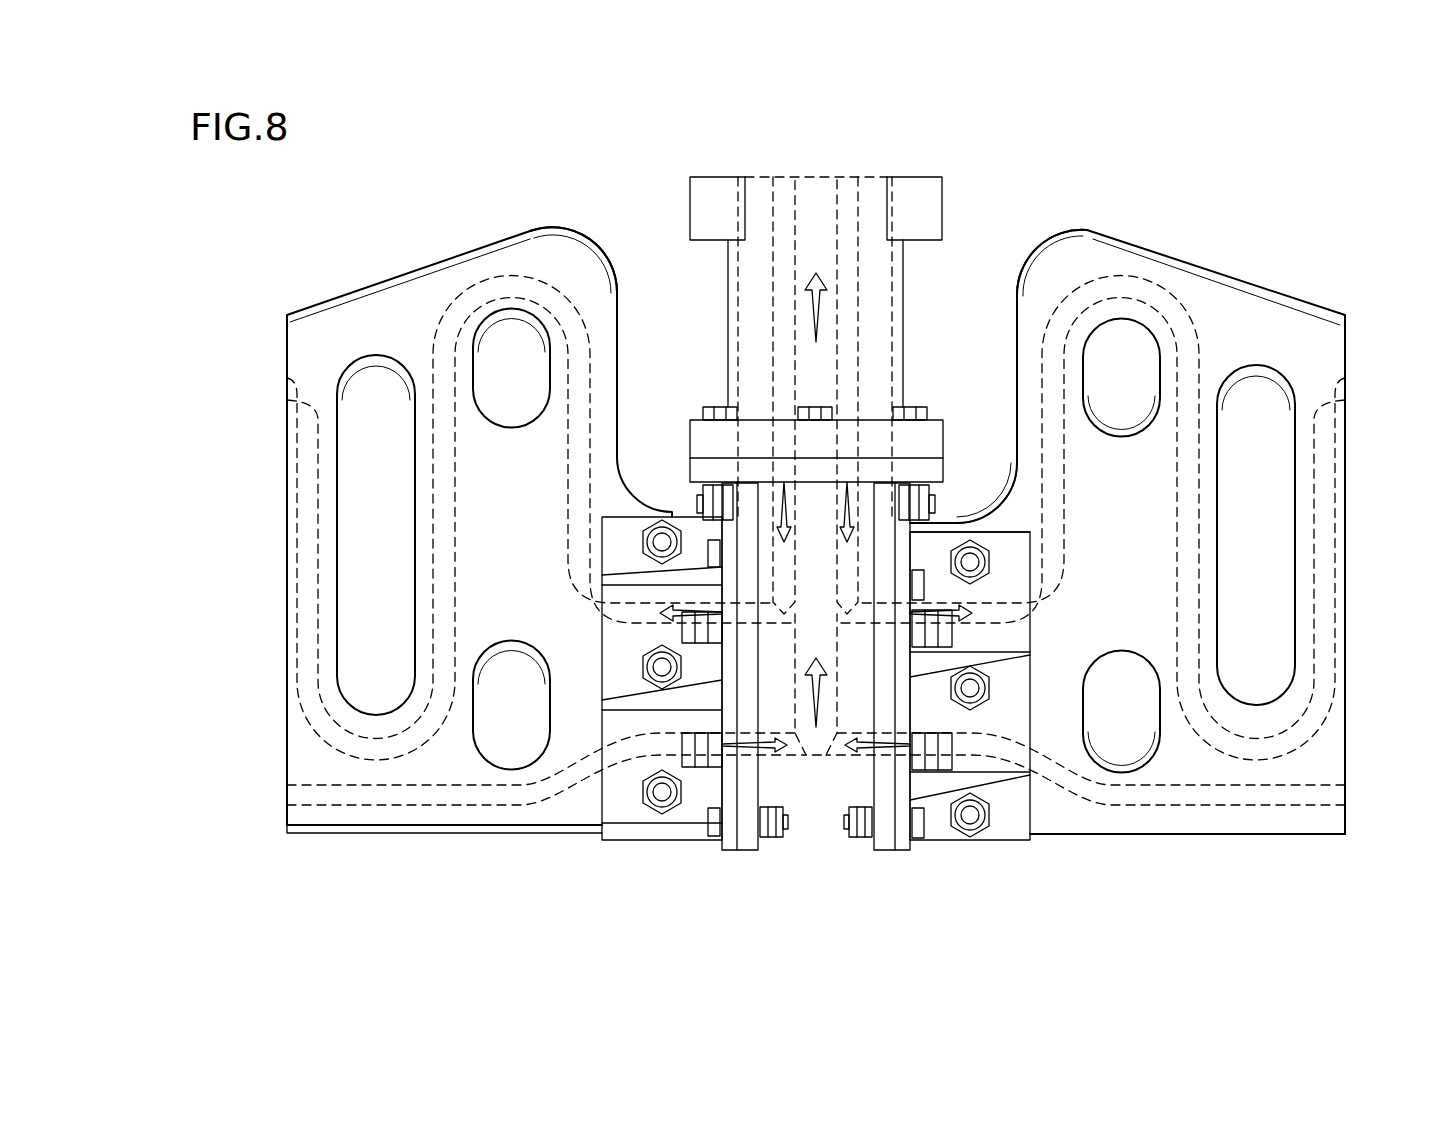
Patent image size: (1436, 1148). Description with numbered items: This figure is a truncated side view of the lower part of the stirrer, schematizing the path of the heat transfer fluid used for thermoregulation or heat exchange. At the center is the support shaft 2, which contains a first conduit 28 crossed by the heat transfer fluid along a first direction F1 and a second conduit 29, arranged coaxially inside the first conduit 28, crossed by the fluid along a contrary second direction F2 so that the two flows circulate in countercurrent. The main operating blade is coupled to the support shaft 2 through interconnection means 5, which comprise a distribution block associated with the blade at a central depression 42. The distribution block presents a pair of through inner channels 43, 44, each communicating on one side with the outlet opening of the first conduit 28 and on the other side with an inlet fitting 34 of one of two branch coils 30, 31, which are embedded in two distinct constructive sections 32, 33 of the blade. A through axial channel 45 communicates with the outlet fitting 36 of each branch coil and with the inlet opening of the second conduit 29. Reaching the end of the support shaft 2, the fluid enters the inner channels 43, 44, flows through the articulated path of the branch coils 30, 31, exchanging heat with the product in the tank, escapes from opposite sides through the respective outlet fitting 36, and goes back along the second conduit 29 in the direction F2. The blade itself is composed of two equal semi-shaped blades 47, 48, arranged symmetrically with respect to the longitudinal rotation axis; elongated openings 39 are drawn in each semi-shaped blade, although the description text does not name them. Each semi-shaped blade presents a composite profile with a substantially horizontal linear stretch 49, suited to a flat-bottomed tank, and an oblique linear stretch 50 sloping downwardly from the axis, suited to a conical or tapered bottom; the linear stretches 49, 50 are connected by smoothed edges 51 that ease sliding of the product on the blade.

The support shaft 2 is at (903, 325).
The interconnection means 5 is at (816, 637).
The first conduit 28 is at (760, 300).
The second conduit 29 is at (806, 170).
The branch coil 30 is at (445, 298).
The branch coil 31 is at (1187, 300).
The constructive section 32 is at (363, 318).
The constructive section 33 is at (1268, 318).
The inlet fitting 34 is at (752, 605).
The outlet fitting 36 is at (748, 757).
The slot 39 is at (505, 350).
The central depression 42 is at (965, 225).
The through inner channel 43 is at (778, 577).
The through inner channel 44 is at (855, 577).
The through axial channel 45 is at (805, 757).
The semi-shaped blade 47 is at (600, 240).
The semi-shaped blade 48 is at (1033, 242).
The horizontal linear stretch 49 is at (535, 840).
The oblique linear stretch 50 is at (318, 300).
The smoothed edge 51 is at (555, 232).
The first direction F1 is at (820, 492).
The second direction F2 is at (828, 285).